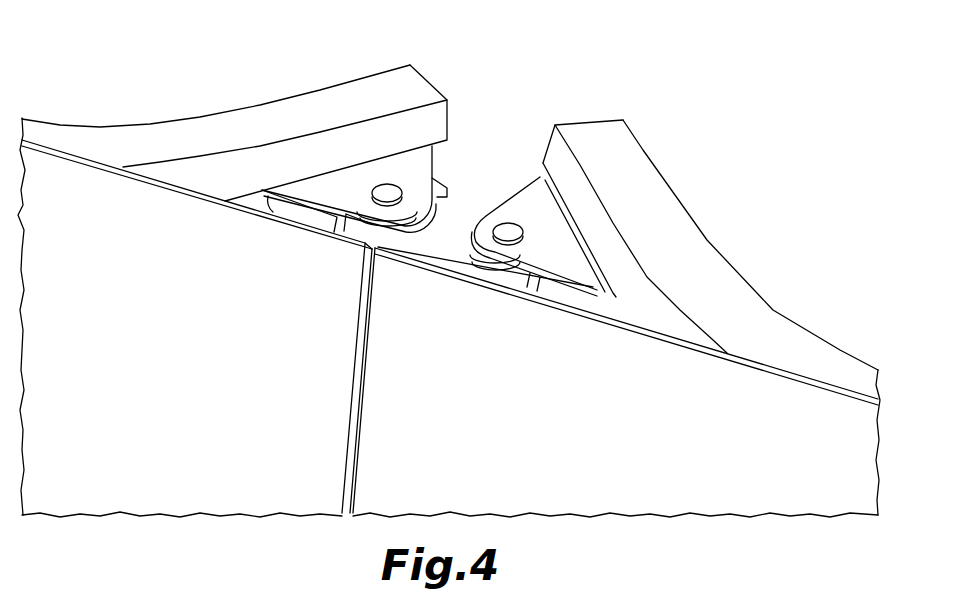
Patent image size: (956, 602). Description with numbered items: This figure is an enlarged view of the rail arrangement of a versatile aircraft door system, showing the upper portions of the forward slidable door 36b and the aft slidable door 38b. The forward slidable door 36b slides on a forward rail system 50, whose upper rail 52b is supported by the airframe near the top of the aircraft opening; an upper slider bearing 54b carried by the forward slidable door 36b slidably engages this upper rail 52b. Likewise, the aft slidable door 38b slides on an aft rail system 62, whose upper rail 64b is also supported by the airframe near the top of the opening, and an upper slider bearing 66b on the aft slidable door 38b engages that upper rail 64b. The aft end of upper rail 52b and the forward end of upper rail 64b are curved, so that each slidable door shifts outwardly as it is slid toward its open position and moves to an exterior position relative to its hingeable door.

The forward slidable door 36b is at (226, 377).
The aft slidable door 38b is at (569, 432).
The forward rail system 50 is at (255, 118).
The upper rail 52b is at (245, 123).
The upper slider bearing 54b is at (407, 175).
The aft rail system 62 is at (628, 242).
The upper rail 64b is at (637, 177).
The upper slider bearing 66b is at (512, 203).